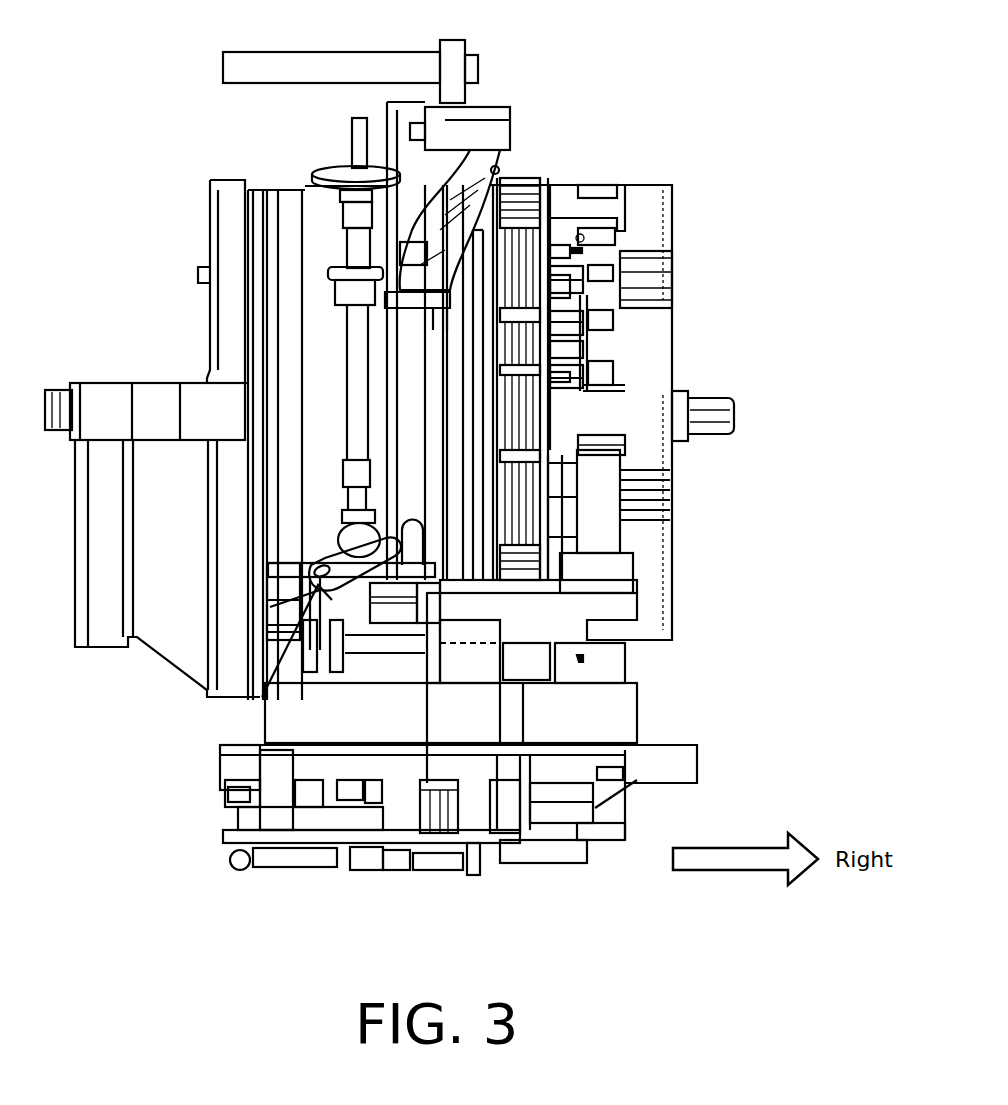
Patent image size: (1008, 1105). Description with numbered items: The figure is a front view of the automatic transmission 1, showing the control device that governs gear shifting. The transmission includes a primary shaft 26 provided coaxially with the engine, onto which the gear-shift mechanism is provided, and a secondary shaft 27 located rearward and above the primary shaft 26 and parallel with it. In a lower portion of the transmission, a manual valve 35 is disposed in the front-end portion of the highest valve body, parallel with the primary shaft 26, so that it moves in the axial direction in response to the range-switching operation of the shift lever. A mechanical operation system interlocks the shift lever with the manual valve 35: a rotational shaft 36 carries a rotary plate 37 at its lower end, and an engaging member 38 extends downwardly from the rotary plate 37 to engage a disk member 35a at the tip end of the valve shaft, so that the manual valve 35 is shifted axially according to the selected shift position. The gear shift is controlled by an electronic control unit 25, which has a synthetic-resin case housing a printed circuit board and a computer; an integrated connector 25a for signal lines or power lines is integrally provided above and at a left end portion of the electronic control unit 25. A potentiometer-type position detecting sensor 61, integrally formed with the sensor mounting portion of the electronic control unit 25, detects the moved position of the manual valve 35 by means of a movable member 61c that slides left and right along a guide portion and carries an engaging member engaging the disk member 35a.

The automatic transmission 1 is at (620, 150).
The electronic control unit 25 is at (603, 587).
The integrated connector 25a is at (597, 503).
The primary shaft 26 is at (160, 393).
The secondary shaft 27 is at (204, 273).
The manual valve 35 is at (372, 655).
The disk member 35a is at (305, 682).
The rotational shaft 36 is at (355, 384).
The rotary plate 37 is at (340, 542).
The engaging member 38 is at (300, 628).
The position detecting sensor 61 is at (290, 594).
The movable member 61c is at (258, 698).